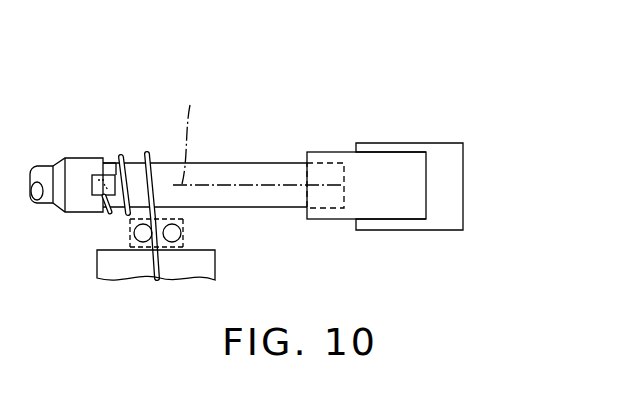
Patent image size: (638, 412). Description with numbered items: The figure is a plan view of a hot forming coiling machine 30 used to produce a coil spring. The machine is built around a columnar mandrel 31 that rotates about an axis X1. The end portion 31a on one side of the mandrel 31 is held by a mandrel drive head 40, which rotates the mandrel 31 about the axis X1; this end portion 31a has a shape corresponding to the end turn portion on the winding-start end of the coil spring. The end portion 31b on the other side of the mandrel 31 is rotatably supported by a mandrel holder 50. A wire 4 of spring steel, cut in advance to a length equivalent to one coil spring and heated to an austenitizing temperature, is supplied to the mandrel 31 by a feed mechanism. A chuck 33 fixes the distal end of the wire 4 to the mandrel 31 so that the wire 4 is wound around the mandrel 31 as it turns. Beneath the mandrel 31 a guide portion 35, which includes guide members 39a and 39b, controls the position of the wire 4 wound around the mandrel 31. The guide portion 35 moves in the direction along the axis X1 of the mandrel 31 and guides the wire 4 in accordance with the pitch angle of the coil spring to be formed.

The hot forming coiling machine 30 is at (316, 104).
The mandrel drive head 40 is at (68, 157).
The mandrel 31 is at (234, 171).
The end portion on one side of the mandrel 31a is at (113, 160).
The end portion on the other side of the mandrel 31b is at (344, 190).
The chuck 33 is at (99, 175).
The wire 4 is at (153, 187).
The axis X1 is at (197, 132).
The mandrel holder 50 is at (412, 165).
The guide member 39a is at (131, 233).
The guide member 39b is at (184, 232).
The guide portion 35 is at (226, 250).